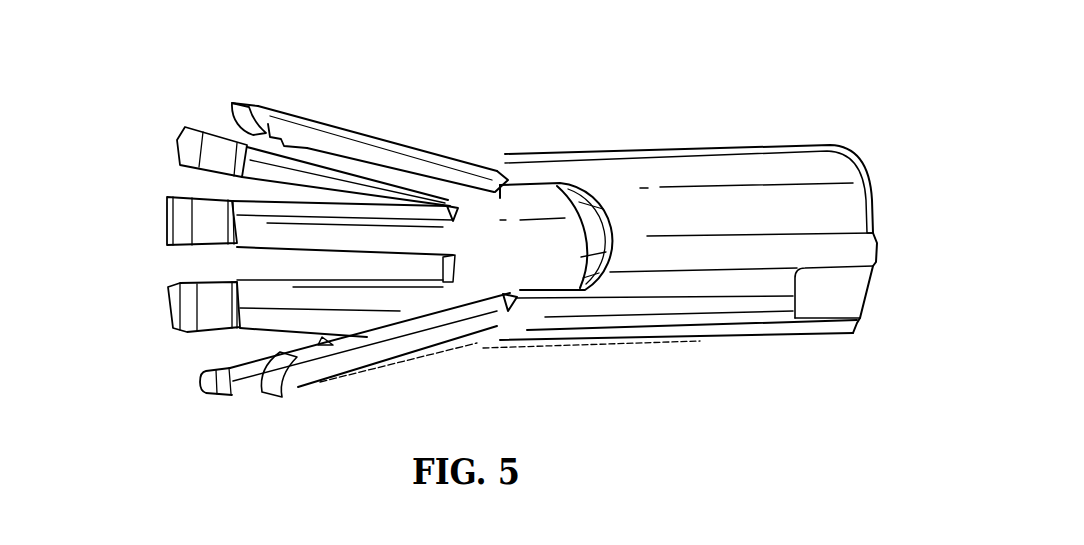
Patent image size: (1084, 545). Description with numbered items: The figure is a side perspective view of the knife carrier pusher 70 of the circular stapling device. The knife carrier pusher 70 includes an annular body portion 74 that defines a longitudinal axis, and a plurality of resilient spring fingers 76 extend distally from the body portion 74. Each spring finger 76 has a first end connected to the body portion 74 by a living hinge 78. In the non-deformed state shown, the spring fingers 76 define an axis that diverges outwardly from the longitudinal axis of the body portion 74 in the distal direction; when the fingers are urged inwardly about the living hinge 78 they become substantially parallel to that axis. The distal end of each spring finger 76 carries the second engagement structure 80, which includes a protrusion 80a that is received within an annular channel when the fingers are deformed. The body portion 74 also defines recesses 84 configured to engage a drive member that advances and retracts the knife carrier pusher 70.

The knife carrier pusher 70 is at (510, 247).
The annular body portion 74 is at (692, 216).
The resilient spring fingers 76 is at (318, 267).
The living hinge 78 is at (487, 163).
The second engagement structure 80 is at (173, 351).
The protrusion 80a is at (213, 267).
The recesses 84 is at (850, 290).